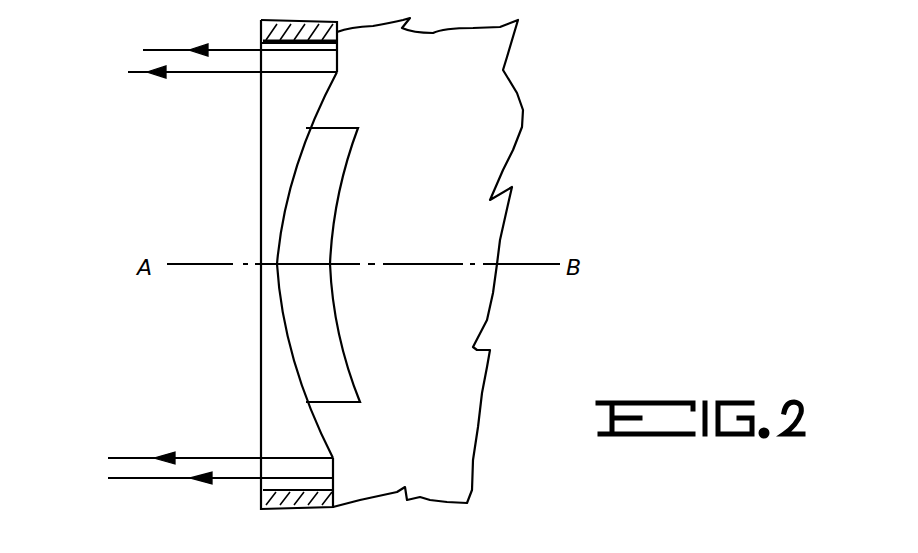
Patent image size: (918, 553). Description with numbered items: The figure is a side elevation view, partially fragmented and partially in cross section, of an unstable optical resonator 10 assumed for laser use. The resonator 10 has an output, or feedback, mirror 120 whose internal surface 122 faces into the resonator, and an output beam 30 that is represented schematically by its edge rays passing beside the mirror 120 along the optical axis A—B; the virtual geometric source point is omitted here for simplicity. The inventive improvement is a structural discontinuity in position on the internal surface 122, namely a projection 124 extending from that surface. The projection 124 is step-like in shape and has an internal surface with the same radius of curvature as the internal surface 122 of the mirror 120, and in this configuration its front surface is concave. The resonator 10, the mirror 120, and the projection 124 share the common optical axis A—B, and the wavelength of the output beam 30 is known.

The unstable optical resonator 10 is at (170, 367).
The output beam 30 is at (245, 78).
The output mirror 120 is at (270, 100).
The internal surface 122 is at (310, 424).
The projection 124 is at (333, 129).